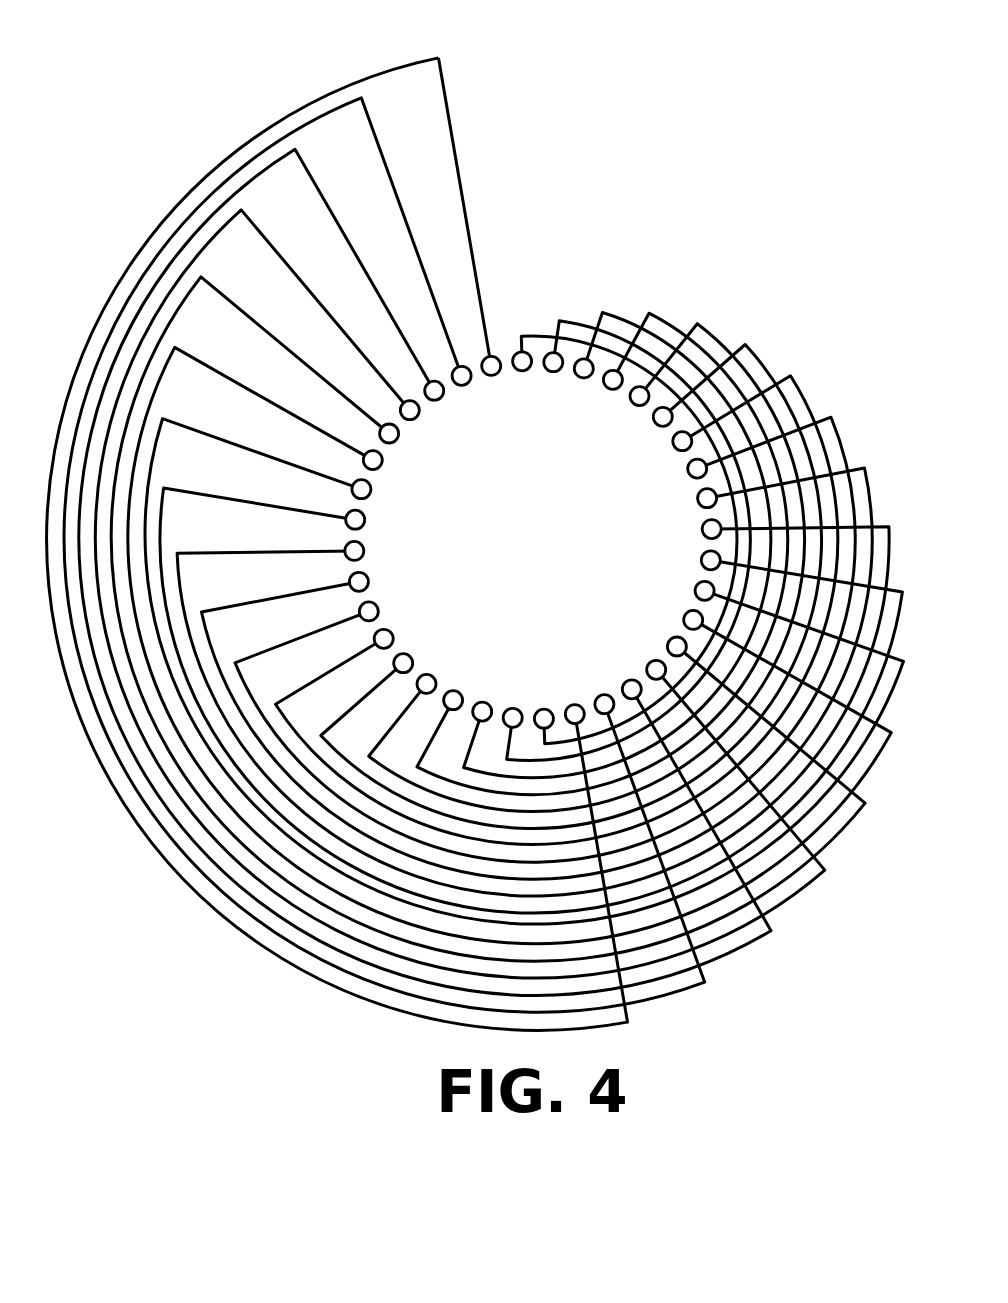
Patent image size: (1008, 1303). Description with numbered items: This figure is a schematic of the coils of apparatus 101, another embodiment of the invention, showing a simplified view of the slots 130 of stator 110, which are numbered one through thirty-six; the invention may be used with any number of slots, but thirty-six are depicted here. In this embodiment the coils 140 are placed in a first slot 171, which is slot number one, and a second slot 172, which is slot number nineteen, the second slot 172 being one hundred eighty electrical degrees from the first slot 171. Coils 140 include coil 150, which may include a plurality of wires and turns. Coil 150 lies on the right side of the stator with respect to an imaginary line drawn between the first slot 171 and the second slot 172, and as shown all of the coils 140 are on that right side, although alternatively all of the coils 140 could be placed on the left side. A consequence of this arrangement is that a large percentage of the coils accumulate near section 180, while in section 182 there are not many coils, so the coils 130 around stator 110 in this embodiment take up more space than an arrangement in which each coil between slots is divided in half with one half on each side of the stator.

The apparatus 101 is at (231, 122).
The stator 110 is at (697, 484).
The slots 130 is at (497, 383).
The coils 140 is at (468, 188).
The coil 150 is at (535, 333).
The first slot 171 is at (517, 380).
The second slot 172 is at (550, 704).
The section 180 is at (215, 930).
The section 182 is at (663, 248).